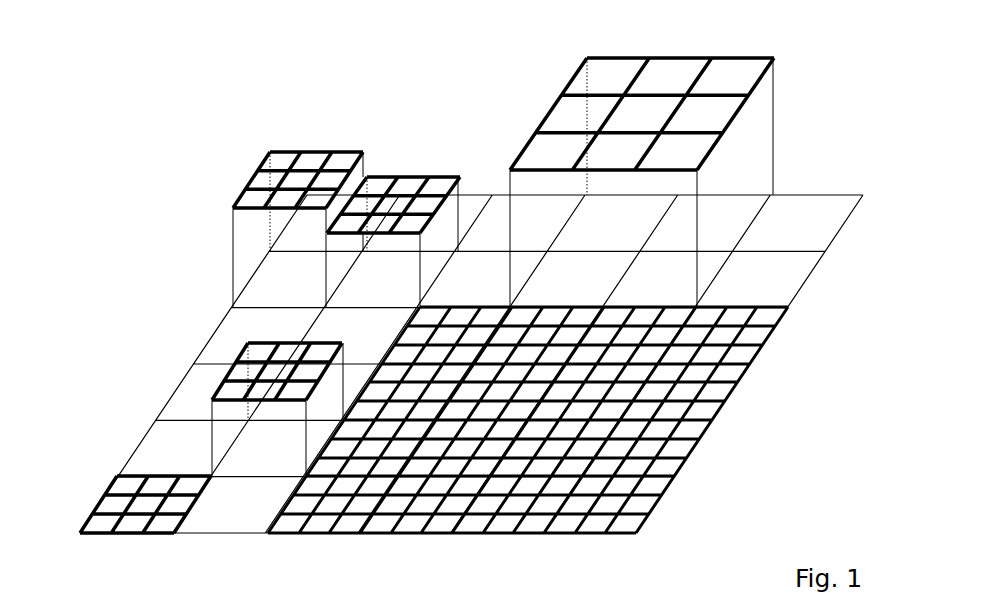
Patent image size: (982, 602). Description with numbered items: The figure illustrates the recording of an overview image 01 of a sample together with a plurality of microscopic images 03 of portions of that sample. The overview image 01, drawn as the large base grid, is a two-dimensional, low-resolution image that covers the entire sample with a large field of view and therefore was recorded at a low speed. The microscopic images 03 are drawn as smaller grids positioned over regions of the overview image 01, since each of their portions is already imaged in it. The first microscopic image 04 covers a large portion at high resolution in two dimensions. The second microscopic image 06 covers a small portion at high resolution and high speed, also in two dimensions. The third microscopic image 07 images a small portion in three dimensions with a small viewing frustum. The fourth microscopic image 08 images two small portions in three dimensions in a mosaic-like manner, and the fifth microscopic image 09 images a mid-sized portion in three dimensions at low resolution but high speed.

The overview image 01 is at (818, 265).
The microscopic images 03 is at (136, 475).
The first microscopic image 04 is at (687, 467).
The second microscopic image 06 is at (107, 490).
The third microscopic image 07 is at (212, 398).
The fourth microscopic image 08 is at (408, 177).
The fifth microscopic image 09 is at (565, 87).